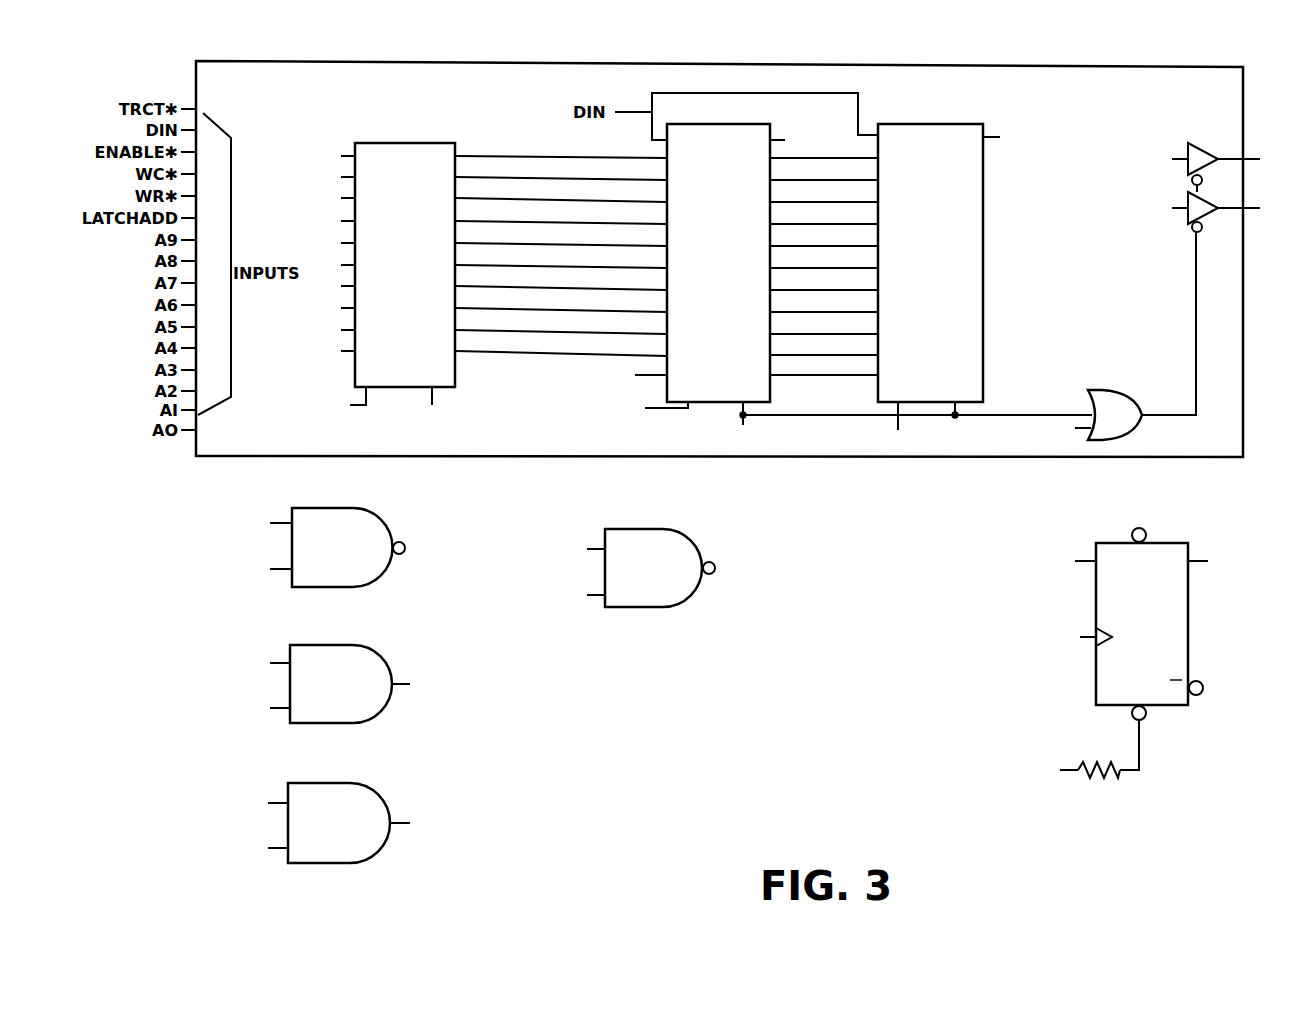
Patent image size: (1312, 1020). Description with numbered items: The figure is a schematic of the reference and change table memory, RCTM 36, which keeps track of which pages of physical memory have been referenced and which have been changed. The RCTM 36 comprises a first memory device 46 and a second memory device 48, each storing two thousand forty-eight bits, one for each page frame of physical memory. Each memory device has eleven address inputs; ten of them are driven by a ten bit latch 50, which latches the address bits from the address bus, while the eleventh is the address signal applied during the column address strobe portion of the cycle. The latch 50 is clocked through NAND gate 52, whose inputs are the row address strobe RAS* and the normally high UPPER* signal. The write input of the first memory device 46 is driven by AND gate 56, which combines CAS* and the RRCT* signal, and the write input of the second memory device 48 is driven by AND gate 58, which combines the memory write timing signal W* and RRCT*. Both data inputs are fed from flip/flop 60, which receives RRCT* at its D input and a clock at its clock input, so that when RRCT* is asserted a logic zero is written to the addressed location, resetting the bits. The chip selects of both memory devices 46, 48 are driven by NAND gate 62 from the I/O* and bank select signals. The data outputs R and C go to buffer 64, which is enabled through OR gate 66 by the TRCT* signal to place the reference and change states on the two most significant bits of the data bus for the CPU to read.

The reference and change table memory (RCTM) 36 is at (1228, 68).
The first memory device 46 is at (770, 383).
The second memory device 48 is at (983, 387).
The ten bit latch 50 is at (415, 143).
The NAND gate 52 is at (362, 577).
The AND gate 56 is at (377, 703).
The AND gate 58 is at (377, 843).
The flip/flop 60 is at (1180, 652).
The NAND gate 62 is at (658, 608).
The buffer 64 is at (1206, 140).
The OR gate 66 is at (1118, 392).